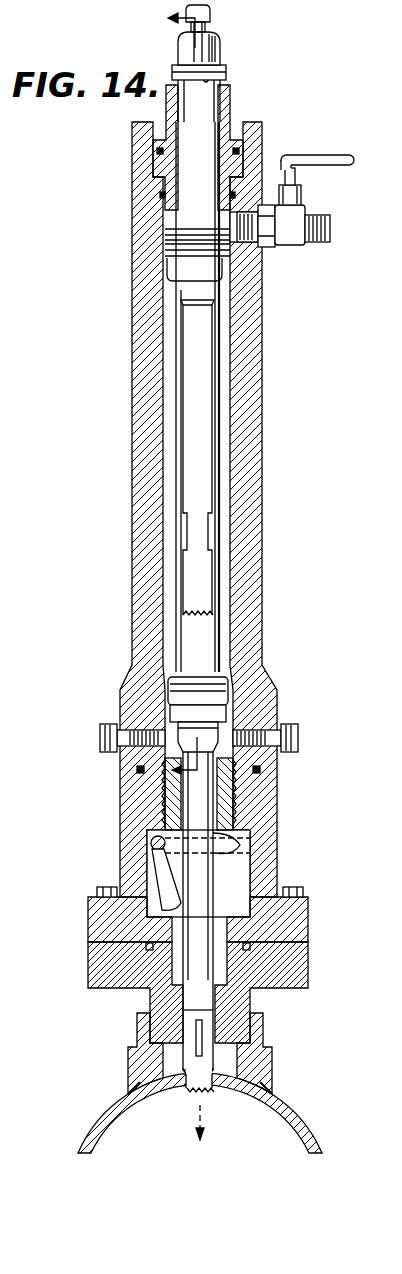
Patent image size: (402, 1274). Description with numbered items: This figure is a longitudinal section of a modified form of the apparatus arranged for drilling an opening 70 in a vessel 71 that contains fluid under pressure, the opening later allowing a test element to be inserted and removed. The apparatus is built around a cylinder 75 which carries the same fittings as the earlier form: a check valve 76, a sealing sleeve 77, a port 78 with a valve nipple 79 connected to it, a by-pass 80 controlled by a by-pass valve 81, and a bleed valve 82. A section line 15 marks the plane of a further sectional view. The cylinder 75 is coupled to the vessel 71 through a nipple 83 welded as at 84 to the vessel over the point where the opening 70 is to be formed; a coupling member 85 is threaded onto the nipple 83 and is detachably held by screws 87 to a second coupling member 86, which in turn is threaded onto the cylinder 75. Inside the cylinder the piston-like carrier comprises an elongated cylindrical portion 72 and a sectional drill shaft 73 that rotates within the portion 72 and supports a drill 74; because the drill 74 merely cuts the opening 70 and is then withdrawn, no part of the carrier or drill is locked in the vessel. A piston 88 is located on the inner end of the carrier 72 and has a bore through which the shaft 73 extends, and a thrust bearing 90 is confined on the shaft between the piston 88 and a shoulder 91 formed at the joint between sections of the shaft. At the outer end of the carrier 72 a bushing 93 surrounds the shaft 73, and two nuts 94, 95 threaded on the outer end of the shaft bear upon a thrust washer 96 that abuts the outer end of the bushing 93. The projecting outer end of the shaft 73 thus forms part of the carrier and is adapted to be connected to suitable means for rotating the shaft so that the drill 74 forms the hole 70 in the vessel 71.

The section line 15 is at (176, 400).
The opening 70 is at (195, 1092).
The vessel 71 is at (118, 1112).
The elongated cylindrical portion 72 is at (224, 22).
The sectional drill shaft 73 is at (218, 437).
The drill 74 is at (205, 585).
The cylinder 75 is at (130, 472).
The check valve 76 is at (170, 843).
The sealing sleeve 77 is at (150, 153).
The port 78 is at (260, 205).
The valve nipple 79 is at (314, 199).
The by-pass 80 is at (242, 798).
The by-pass valve 81 is at (282, 737).
The bleed valve 82 is at (110, 724).
The nipple 83 is at (272, 1067).
The weld 84 is at (276, 1088).
The coupling member 85 is at (308, 965).
The coupling member 86 is at (308, 925).
The screws 87 is at (98, 890).
The piston 88 is at (158, 250).
The thrust bearing 90 is at (222, 700).
The shoulder 91 is at (218, 717).
The bushing 93 is at (208, 80).
The nut 94 is at (210, 43).
The nut 95 is at (186, 49).
The thrust washer 96 is at (224, 72).